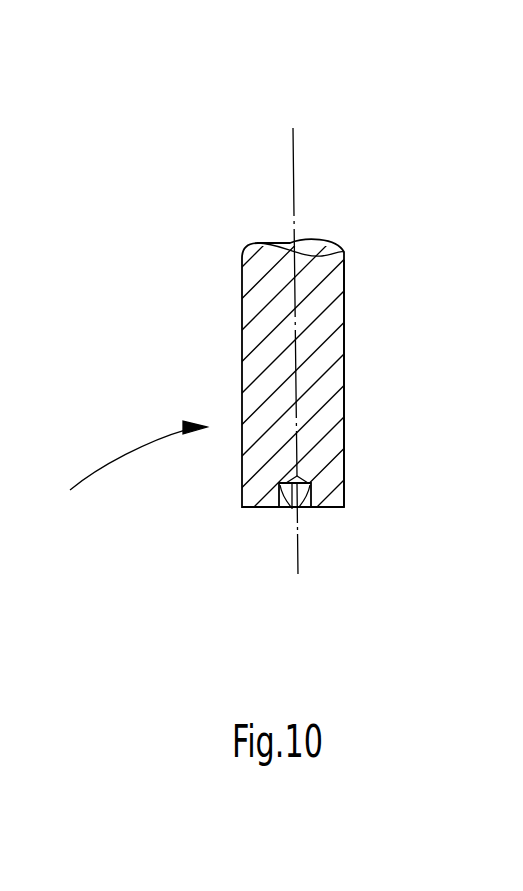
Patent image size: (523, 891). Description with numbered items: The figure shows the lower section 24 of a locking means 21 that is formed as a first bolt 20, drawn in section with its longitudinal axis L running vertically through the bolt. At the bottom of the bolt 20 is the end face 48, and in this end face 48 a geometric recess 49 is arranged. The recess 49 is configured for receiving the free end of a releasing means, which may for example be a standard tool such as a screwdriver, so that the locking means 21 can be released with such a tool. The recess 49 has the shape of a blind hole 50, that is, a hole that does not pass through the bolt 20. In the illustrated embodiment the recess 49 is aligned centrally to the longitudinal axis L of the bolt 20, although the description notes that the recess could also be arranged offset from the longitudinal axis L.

The longitudinal axis L is at (295, 172).
The first bolt 20 is at (242, 347).
The locking means 21 is at (343, 372).
The lower section 24 is at (133, 472).
The end face 48 is at (263, 507).
The recess 49 is at (292, 509).
The blind hole 50 is at (304, 507).